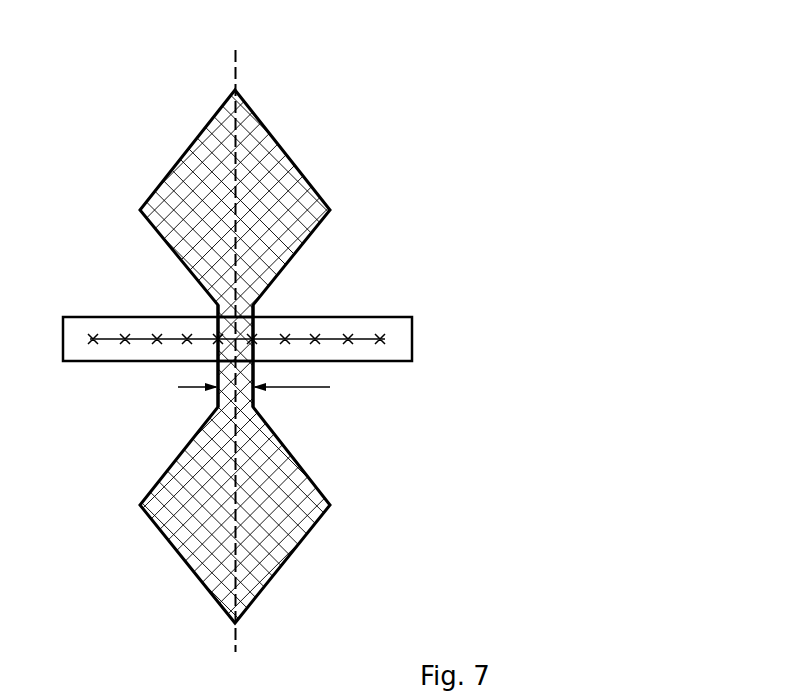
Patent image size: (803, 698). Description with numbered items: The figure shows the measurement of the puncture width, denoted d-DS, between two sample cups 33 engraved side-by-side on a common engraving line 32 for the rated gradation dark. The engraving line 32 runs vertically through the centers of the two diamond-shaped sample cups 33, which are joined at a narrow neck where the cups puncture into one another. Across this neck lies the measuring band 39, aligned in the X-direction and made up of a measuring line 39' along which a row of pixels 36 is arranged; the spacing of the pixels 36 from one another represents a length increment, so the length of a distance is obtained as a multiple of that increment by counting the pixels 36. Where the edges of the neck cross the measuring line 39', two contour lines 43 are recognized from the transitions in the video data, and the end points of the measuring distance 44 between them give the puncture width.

The engraving line 32 is at (236, 62).
The sample cup 33 is at (267, 165).
The pixels 36 is at (123, 337).
The measuring band 39 is at (256, 294).
The measuring line 39' is at (276, 390).
The contour lines 43 is at (215, 317).
The measuring distance 44 is at (218, 390).